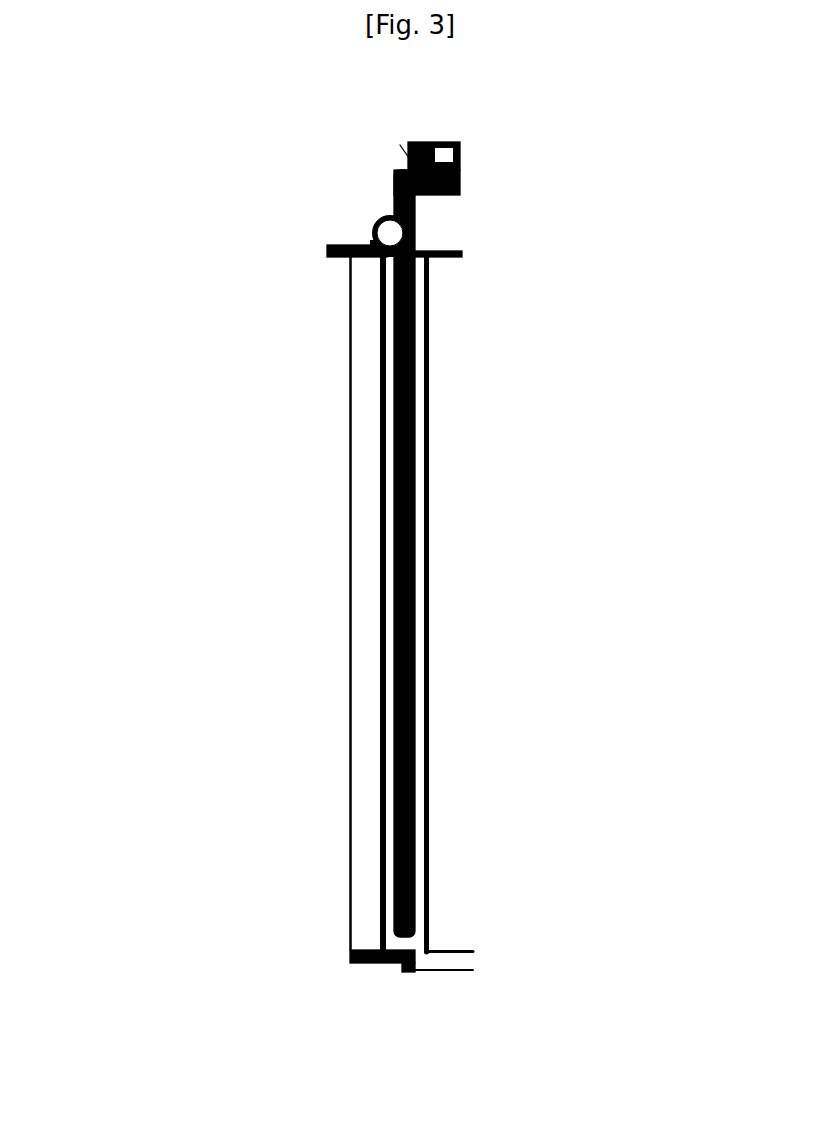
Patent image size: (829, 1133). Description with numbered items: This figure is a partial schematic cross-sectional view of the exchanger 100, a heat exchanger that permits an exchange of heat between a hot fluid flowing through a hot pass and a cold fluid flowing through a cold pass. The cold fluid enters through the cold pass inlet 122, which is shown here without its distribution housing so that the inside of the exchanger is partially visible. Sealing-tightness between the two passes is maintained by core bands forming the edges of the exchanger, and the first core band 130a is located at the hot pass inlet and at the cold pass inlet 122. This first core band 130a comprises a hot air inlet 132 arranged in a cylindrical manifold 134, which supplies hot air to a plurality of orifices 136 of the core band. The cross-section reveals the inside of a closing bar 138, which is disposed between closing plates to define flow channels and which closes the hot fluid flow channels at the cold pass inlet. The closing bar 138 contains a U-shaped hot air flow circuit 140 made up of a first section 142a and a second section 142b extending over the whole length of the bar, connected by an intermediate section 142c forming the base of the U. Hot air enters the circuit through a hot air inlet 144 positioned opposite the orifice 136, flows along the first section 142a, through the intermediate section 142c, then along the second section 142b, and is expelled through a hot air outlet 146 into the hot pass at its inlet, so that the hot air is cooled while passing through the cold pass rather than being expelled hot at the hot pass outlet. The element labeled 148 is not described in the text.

The exchanger 100 is at (254, 152).
The cold pass inlet 122 is at (323, 505).
The first core band 130a is at (330, 250).
The hot air inlet 132 is at (393, 222).
The cylindrical manifold 134 is at (377, 218).
The orifice 136 is at (372, 238).
The closing bar 138 is at (397, 522).
The hot air flow circuit 140 is at (390, 382).
The first section 142a is at (390, 723).
The second section 142b is at (420, 830).
The intermediate section 142c is at (402, 965).
The hot air inlet 144 is at (380, 260).
The hot air outlet 146 is at (427, 262).
The bracket 148 is at (447, 223).